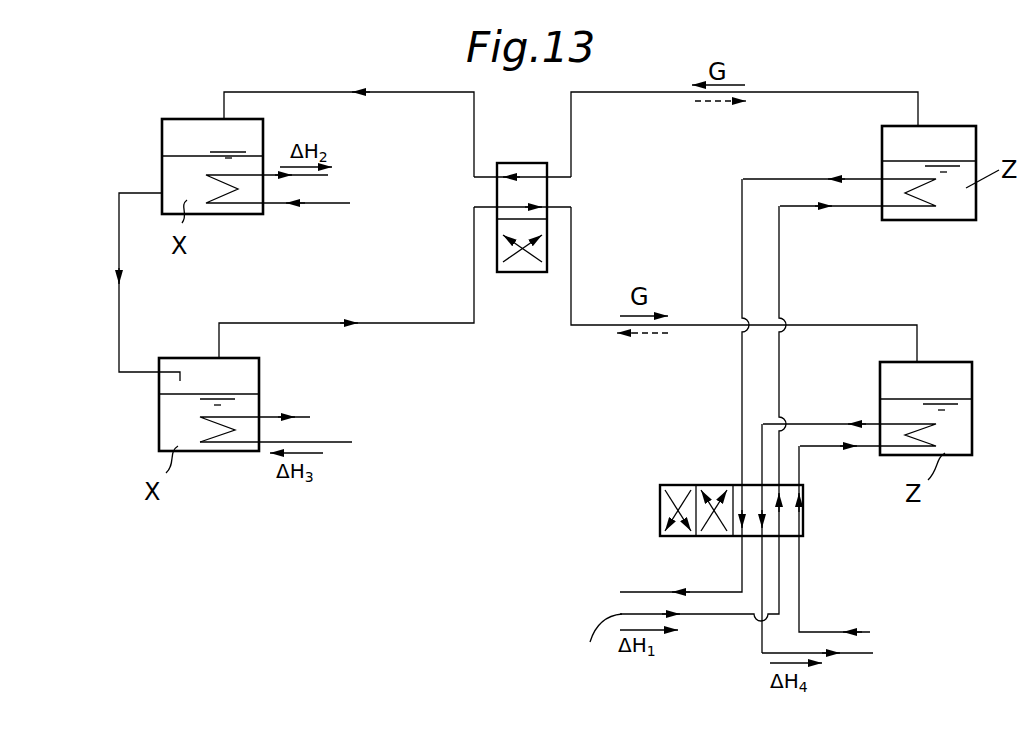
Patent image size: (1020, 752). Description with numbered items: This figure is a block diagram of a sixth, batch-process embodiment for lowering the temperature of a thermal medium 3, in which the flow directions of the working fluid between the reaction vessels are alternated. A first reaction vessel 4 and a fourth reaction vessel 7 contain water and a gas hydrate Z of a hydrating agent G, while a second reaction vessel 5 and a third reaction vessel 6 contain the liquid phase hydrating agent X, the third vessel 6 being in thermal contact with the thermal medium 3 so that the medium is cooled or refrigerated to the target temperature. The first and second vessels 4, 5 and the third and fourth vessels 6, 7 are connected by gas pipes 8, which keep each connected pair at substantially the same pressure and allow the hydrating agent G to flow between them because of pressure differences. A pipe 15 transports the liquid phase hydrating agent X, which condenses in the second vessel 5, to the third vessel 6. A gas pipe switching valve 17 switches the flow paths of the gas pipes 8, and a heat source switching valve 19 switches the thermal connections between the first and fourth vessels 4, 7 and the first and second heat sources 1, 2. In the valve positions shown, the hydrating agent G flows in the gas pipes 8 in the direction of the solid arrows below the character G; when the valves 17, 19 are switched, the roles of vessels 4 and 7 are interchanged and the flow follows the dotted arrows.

The first heat source 1 is at (599, 642).
The second heat source 2 is at (314, 205).
The thermal medium 3 is at (352, 442).
The first reaction vessel 4 is at (978, 135).
The second reaction vessel 5 is at (249, 102).
The third reaction vessel 6 is at (238, 453).
The fourth reaction vessel 7 is at (968, 456).
The gas pipe 8 is at (801, 91).
The pipe 15 is at (117, 325).
The gas pipe switching valve 17 is at (525, 273).
The heat source switching valve 19 is at (803, 521).